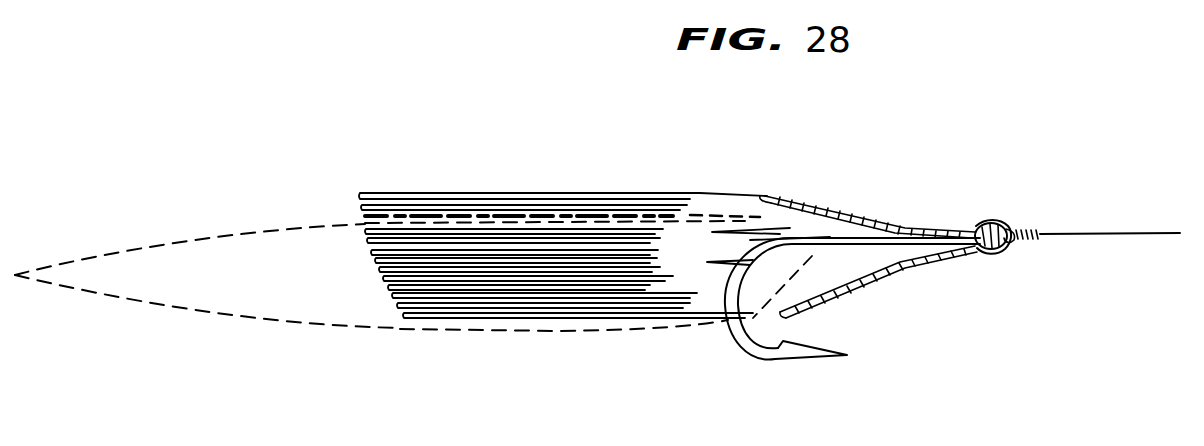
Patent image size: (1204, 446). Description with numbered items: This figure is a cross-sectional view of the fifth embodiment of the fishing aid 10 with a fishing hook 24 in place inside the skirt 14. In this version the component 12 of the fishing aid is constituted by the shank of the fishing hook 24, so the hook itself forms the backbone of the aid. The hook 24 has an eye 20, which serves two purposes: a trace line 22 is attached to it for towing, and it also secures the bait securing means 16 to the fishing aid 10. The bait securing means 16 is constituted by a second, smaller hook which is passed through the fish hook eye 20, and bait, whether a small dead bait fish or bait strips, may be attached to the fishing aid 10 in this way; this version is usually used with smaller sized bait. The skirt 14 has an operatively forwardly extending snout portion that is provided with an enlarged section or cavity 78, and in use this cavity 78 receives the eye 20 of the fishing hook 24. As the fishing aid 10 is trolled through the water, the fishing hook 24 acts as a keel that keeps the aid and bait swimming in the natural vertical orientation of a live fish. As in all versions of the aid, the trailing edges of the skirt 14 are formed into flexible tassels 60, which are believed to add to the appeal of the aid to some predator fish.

The fishing aid 10 is at (905, 284).
The component 12 is at (893, 236).
The skirt 14 is at (783, 313).
The bait securing means 16 is at (815, 255).
The eye 20 is at (1005, 224).
The trace line 22 is at (1127, 235).
The fishing hook 24 is at (740, 362).
The tassels 60 is at (540, 288).
The enlarged section or cavity 78 is at (986, 212).